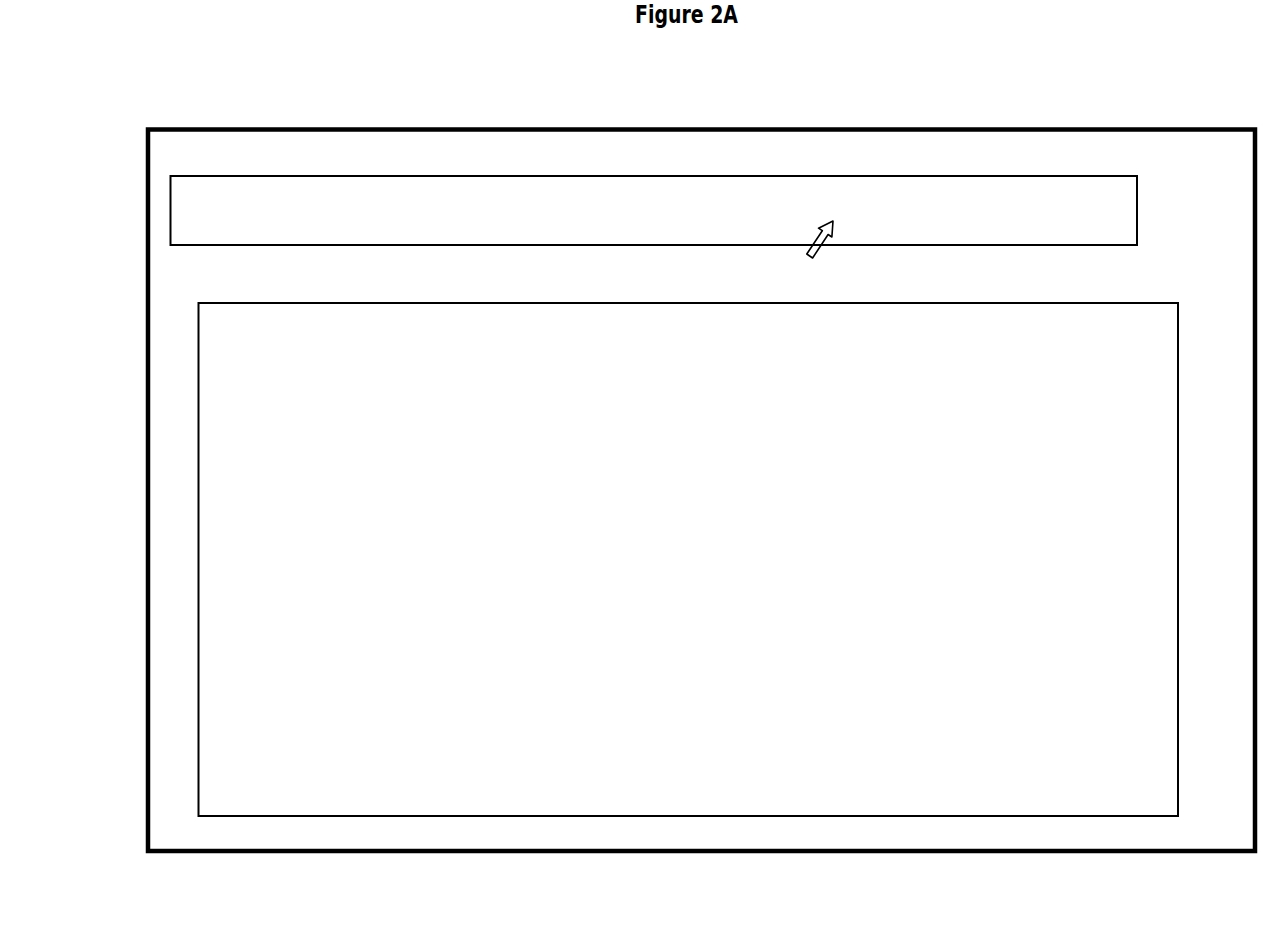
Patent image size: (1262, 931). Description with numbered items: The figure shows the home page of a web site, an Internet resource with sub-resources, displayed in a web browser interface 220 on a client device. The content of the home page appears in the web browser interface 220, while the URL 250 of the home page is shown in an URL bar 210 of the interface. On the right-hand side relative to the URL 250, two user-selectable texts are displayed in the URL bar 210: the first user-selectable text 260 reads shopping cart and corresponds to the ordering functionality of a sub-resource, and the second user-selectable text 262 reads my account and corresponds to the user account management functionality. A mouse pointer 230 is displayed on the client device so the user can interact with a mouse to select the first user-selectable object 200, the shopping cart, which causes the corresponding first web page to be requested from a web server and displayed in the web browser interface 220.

The first user-selectable object 200 is at (1190, 128).
The URL bar 210 is at (1138, 215).
The web browser interface 220 is at (1179, 598).
The mouse pointer 230 is at (809, 257).
The URL 250 is at (358, 193).
The first user-selectable text 260 is at (857, 193).
The second user-selectable text 262 is at (1047, 193).